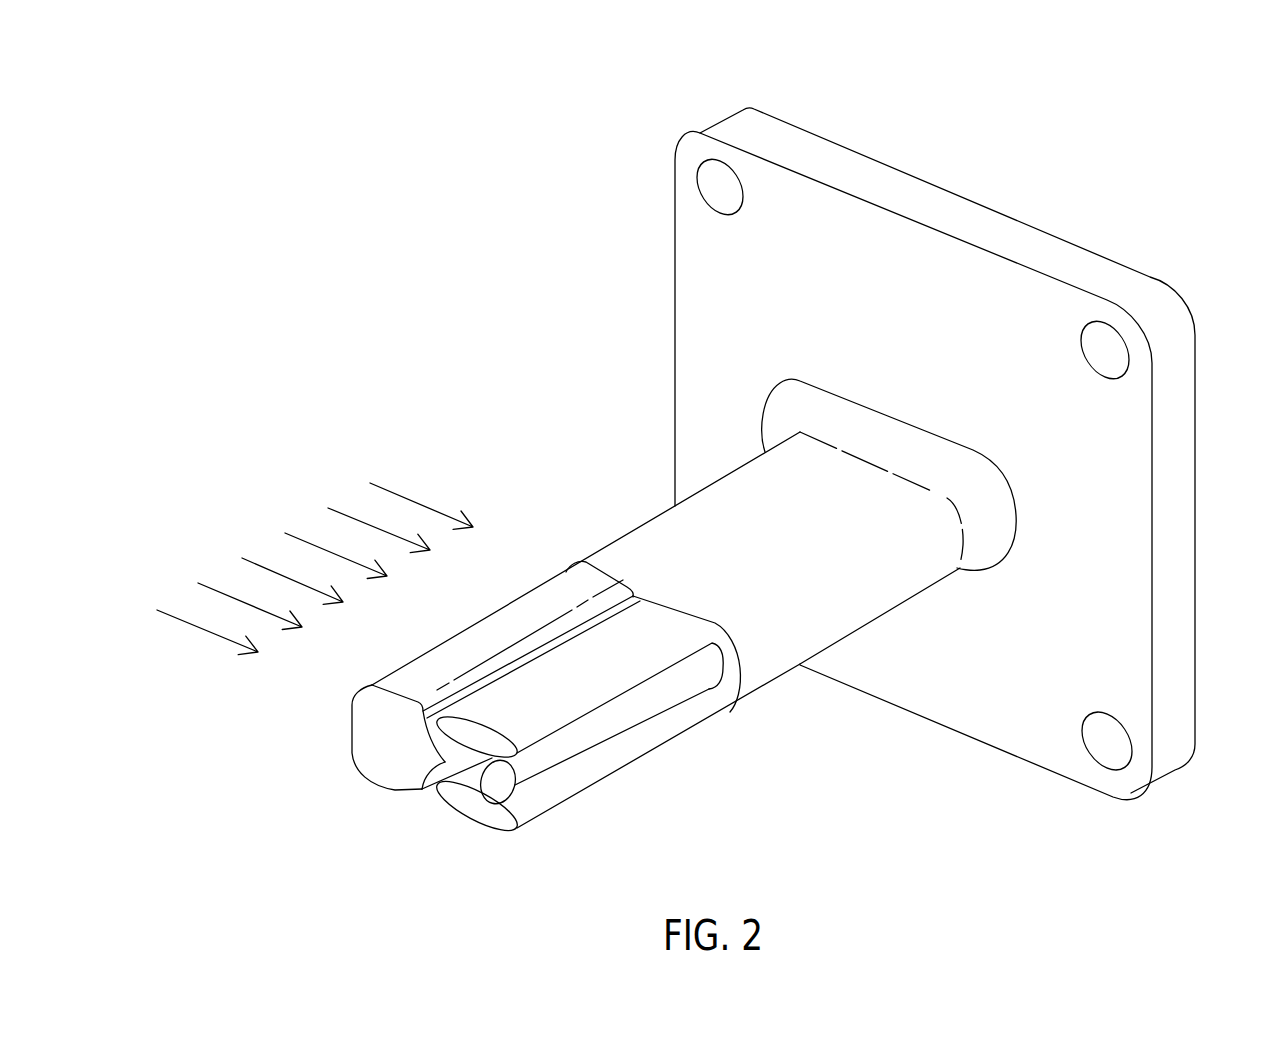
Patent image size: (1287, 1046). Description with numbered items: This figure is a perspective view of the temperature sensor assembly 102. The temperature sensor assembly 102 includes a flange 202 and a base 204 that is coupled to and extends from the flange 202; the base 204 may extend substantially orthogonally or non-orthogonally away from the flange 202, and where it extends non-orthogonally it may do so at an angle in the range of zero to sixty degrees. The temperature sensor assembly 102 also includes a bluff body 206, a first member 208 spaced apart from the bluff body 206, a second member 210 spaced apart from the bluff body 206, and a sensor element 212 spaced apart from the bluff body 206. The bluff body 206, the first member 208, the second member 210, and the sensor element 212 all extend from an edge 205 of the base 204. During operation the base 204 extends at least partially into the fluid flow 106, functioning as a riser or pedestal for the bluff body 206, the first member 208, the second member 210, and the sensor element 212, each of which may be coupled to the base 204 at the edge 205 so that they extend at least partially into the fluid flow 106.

The temperature sensor assembly 102 is at (1131, 120).
The fluid flow 106 is at (315, 557).
The flange 202 is at (1181, 295).
The base 204 is at (890, 608).
The edge 205 is at (733, 678).
The bluff body 206 is at (458, 642).
The first member 208 is at (586, 650).
The second member 210 is at (575, 785).
The sensor element 212 is at (630, 722).